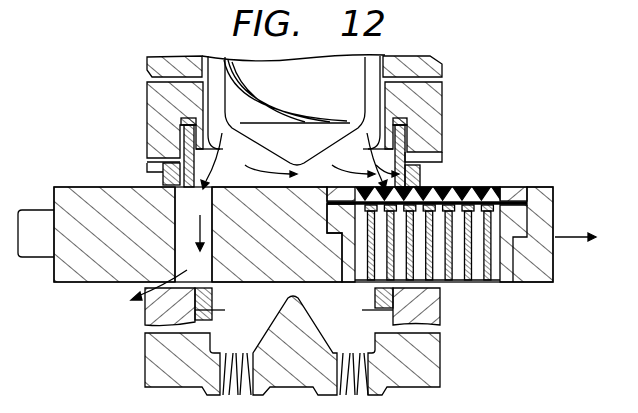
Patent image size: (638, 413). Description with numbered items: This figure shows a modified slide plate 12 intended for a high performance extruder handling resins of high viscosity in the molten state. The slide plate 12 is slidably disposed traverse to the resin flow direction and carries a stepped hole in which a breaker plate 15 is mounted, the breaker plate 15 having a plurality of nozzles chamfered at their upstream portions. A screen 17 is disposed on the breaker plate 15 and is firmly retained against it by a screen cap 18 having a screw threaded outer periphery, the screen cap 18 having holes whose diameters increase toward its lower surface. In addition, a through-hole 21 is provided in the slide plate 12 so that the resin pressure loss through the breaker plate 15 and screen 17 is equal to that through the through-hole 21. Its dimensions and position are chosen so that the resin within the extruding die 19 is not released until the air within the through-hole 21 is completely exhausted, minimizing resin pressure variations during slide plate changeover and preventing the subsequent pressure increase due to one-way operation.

The slide plate 12 is at (75, 278).
The through-hole 21 is at (180, 258).
The extruding die 19 is at (160, 372).
The screen cap 18 is at (445, 189).
The screen 17 is at (510, 189).
The breaker plate 15 is at (508, 278).